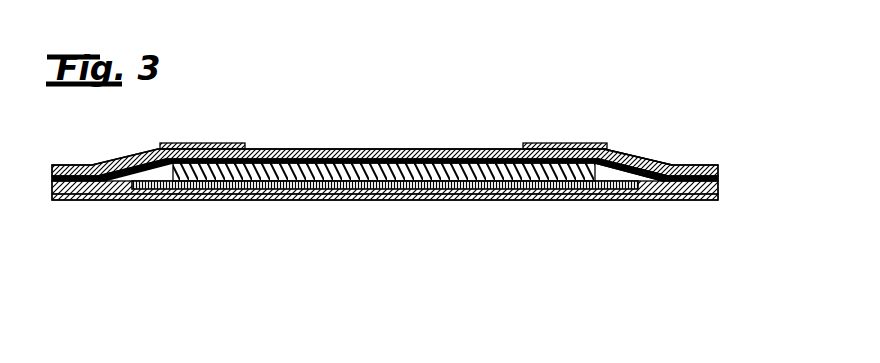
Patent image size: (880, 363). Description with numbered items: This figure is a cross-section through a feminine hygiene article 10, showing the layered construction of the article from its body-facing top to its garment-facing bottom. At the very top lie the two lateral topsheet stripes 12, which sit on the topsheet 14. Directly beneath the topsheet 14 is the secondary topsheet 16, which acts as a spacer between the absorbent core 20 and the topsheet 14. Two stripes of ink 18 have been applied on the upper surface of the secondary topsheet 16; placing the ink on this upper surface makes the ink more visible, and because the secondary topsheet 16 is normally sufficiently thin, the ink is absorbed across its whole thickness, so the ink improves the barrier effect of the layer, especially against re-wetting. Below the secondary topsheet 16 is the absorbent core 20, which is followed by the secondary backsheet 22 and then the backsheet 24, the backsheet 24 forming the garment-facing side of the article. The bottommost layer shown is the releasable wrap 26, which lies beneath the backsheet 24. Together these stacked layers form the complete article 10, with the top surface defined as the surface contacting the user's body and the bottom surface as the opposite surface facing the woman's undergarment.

The feminine hygiene article 10 is at (597, 229).
The lateral topsheet stripe 12 is at (549, 144).
The topsheet 14 is at (330, 150).
The secondary topsheet 16 is at (388, 159).
The stripe of ink 18 is at (635, 162).
The absorbent core 20 is at (353, 179).
The secondary backsheet 22 is at (420, 184).
The backsheet 24 is at (490, 195).
The releasable wrap 26 is at (533, 197).